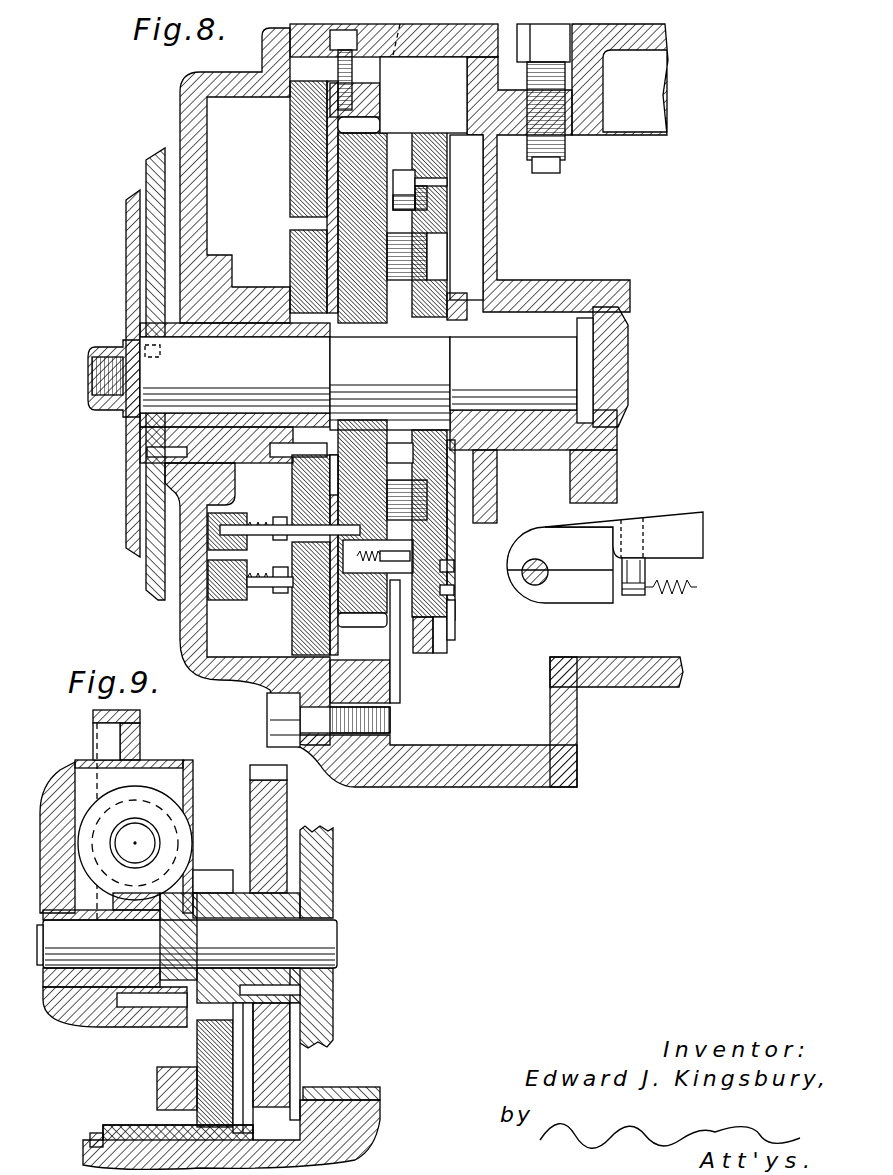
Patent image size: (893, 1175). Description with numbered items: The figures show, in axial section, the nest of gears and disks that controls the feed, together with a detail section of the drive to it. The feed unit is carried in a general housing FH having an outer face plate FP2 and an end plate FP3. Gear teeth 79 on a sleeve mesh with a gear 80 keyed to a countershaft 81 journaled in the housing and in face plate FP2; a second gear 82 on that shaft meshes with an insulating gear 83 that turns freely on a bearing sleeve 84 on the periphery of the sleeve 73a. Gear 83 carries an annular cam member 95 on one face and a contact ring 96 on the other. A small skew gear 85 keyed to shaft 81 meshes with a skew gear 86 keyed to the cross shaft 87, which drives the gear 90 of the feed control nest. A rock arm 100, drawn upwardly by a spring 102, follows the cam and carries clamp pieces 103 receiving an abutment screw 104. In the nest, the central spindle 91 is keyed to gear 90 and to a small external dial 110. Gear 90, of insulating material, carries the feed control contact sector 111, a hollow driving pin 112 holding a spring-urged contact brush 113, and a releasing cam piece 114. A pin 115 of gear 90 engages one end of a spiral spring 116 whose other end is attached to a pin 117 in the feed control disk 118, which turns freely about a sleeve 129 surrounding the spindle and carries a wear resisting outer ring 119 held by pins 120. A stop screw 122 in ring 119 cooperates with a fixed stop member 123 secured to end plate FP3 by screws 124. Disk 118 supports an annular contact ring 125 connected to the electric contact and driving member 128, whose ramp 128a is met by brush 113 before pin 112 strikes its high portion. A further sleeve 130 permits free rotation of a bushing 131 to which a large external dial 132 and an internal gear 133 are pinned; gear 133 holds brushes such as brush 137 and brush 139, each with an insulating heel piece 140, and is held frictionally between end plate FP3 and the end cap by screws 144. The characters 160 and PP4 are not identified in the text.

In FIG. 8, the end plate FP3 is at (503, 26).
In FIG. 8, the internal gear 133 is at (305, 325).
In FIG. 8, the bushing 131 is at (170, 440).
In FIG. 8, the large external dial 132 is at (150, 577).
In FIG. 8, the small external dial 110 is at (130, 270).
In FIG. 8, the sleeve 130 is at (215, 413).
In FIG. 8, the sleeve 129 is at (393, 427).
In FIG. 8, the spindle 91 is at (545, 345).
In FIG. 8, the feed control contact sector 111 is at (290, 150).
In FIG. 8, the pin 115 is at (292, 477).
In FIG. 8, the gear 90 is at (357, 322).
In FIG. 8, the pin 117 is at (440, 510).
In FIG. 8, the spiral spring 116 is at (398, 282).
In FIG. 8, the electric contact and mechanical driving member 128 is at (420, 178).
In FIG. 8, the annular contact ring 125 is at (427, 197).
In FIG. 8, the ramp 128a is at (447, 215).
In FIG. 8, the feed control disk 118 is at (437, 427).
In FIG. 8, the screws 124 is at (335, 30).
In FIG. 8, the fixed stop member 123 is at (390, 40).
In FIG. 8, the stop screw 122 is at (400, 60).
In FIG. 8, the pins 120 is at (427, 92).
In FIG. 8, the stop 160 is at (497, 472).
In FIG. 8, the contact brush 113 is at (448, 548).
In FIG. 8, the hollow driving pin 112 is at (450, 592).
In FIG. 8, the wear resisting outer ring 119 is at (455, 623).
In FIG. 8, the releasing cam piece 114 is at (400, 617).
In FIG. 8, the insulating heel piece 140 is at (210, 520).
In FIG. 8, the brush 139 is at (277, 518).
In FIG. 8, the brush 137 is at (278, 592).
In FIG. 8, the screws 144 is at (312, 742).
In FIG. 8, the plate PP4 is at (240, 675).
In FIG. 8, the clamp pieces 103 is at (588, 583).
In FIG. 8, the abutment screw 104 is at (540, 585).
In FIG. 8, the rock arm 100 is at (680, 522).
In FIG. 8, the spring 102 is at (688, 592).
In FIG. 9, the outer face plate FP2 is at (60, 768).
In FIG. 9, the skew gear 86 is at (185, 845).
In FIG. 9, the cross shaft 87 is at (138, 833).
In FIG. 9, the second gear 82 is at (212, 872).
In FIG. 9, the general housing FH is at (336, 868).
In FIG. 9, the countershaft 81 is at (320, 935).
In FIG. 9, the gear 83 is at (195, 1040).
In FIG. 9, the skew gear 85 is at (125, 993).
In FIG. 9, the contact ring 96 is at (240, 1050).
In FIG. 9, the annular cam member 95 is at (170, 1080).
In FIG. 9, the gear 80 is at (283, 1090).
In FIG. 9, the gear teeth 79 is at (335, 1125).
In FIG. 9, the sleeve 73a is at (372, 1112).
In FIG. 9, the bearing sleeve 84 is at (108, 1132).